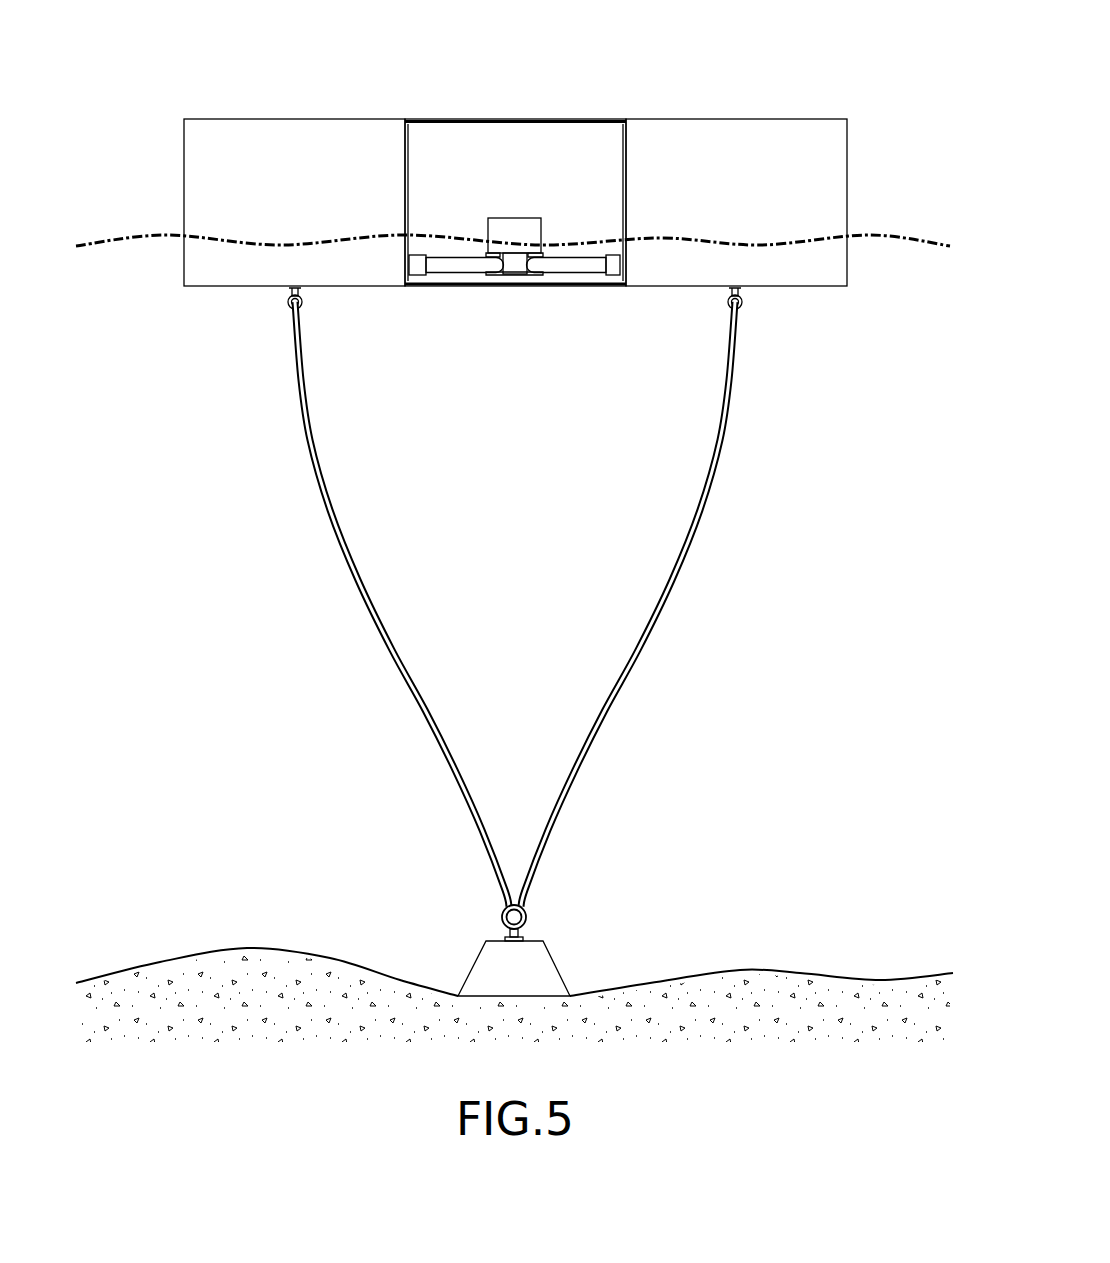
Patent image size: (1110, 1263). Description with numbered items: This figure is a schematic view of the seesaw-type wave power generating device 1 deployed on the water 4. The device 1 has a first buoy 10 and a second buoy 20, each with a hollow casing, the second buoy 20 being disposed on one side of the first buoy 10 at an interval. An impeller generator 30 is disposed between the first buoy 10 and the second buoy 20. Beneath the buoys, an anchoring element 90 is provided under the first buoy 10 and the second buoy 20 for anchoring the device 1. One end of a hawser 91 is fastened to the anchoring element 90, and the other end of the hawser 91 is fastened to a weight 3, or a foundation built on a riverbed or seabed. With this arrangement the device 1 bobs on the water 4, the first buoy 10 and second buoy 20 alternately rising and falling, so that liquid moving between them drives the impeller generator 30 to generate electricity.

The seesaw-type wave power generating device 1 is at (515, 144).
The first buoy 10 is at (293, 119).
The second buoy 20 is at (737, 119).
The impeller generator 30 is at (511, 203).
The water 4 is at (890, 240).
The anchoring element 90 is at (283, 301).
The hawser 91 is at (713, 487).
The weight 3 is at (541, 971).